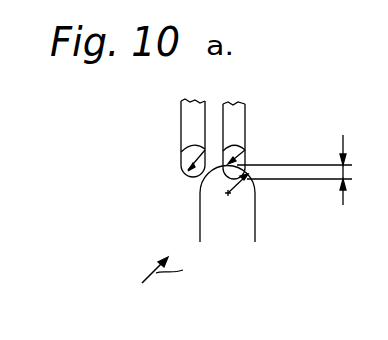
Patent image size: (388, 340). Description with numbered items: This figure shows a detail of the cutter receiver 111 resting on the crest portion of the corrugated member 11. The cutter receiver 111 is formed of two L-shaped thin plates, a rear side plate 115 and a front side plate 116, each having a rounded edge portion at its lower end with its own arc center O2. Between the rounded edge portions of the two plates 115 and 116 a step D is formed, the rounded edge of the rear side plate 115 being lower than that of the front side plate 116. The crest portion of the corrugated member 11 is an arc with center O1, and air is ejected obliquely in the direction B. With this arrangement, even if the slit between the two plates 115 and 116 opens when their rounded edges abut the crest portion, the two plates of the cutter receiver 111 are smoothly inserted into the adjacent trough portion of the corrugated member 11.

The rear side plate 115 is at (188, 121).
The front side plate 116 is at (238, 125).
The cutter receiver 111 is at (239, 109).
The corrugated member 11 is at (255, 220).
The center of the arc of the crest portion O1 is at (227, 193).
The center of the arc of the rounded edge portion O2 is at (278, 146).
The step D is at (304, 170).
The air ejection direction B is at (173, 268).